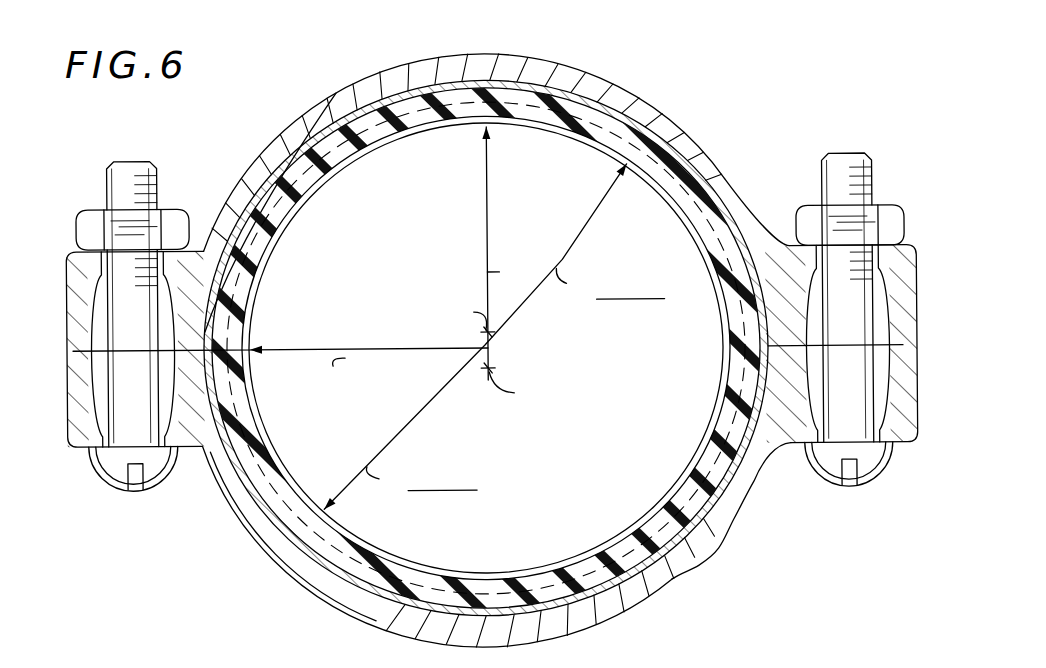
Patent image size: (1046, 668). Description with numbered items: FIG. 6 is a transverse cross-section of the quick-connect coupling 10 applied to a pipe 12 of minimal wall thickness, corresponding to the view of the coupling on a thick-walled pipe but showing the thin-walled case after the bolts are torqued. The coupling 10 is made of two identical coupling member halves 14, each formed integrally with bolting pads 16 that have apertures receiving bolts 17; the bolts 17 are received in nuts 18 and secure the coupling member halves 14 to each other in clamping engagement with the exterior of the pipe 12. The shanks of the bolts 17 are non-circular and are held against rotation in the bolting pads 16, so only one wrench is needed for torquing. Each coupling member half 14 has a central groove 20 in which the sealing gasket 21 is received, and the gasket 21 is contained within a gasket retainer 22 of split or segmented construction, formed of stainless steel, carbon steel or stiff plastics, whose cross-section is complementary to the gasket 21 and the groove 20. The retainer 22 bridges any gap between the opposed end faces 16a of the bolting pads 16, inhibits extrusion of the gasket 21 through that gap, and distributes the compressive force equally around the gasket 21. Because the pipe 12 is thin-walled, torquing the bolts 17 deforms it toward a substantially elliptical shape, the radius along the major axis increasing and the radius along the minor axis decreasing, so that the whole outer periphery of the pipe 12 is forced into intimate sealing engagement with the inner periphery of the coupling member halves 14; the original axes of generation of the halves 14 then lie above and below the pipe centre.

The quick-connect coupling 10 is at (266, 136).
The pipe 12 is at (542, 126).
The coupling member half 14 is at (341, 93).
The bolting pad 16 is at (74, 317).
The end face 16a is at (81, 348).
The bolt 17 is at (128, 161).
The nut 18 is at (176, 212).
The central groove 20 is at (669, 142).
The sealing gasket 21 is at (539, 588).
The gasket retainer 22 is at (597, 102).